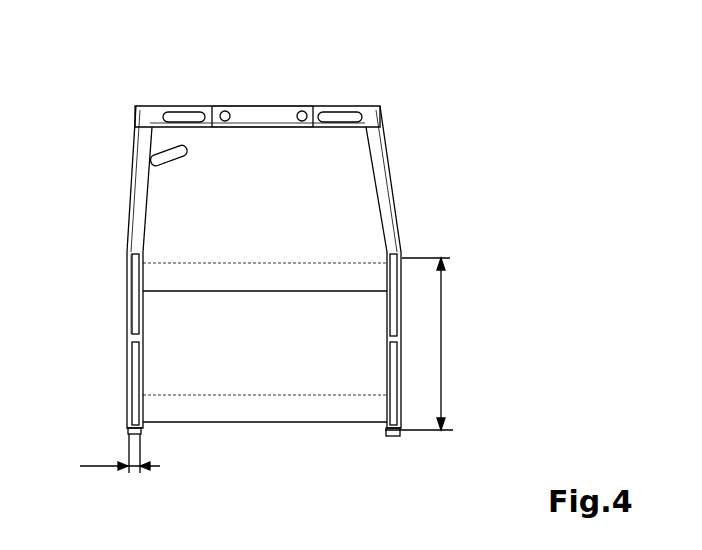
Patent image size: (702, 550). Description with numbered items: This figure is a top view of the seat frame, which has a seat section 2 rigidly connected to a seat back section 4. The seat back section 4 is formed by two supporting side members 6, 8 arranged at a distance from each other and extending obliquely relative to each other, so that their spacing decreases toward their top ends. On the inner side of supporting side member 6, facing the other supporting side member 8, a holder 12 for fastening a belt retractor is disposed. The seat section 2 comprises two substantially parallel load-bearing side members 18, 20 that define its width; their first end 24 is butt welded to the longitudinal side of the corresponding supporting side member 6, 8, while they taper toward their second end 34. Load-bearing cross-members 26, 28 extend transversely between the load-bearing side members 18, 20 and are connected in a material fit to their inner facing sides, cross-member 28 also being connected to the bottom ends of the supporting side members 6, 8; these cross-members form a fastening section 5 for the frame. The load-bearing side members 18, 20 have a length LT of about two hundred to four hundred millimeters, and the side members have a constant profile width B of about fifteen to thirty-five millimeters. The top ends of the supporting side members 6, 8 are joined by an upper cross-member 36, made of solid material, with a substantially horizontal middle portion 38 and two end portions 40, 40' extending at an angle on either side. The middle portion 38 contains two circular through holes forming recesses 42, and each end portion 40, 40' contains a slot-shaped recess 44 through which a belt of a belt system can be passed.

The seat section 2 is at (245, 443).
The seat back section 4 is at (412, 133).
The fastening section 5 is at (245, 360).
The supporting side member 6 is at (131, 180).
The supporting side member 8 is at (392, 180).
The holder 12 is at (168, 165).
The load-bearing side member 18 is at (128, 340).
The load-bearing side member 20 is at (403, 311).
The first end 24 is at (120, 277).
The load-bearing cross-member 26 is at (292, 407).
The load-bearing cross-member 28 is at (200, 278).
The second end 34 is at (386, 429).
The upper cross-member 36 is at (260, 128).
The middle portion 38 is at (245, 115).
The end portion 40 is at (221, 91).
The end portion 40' is at (390, 98).
The recess 42 is at (223, 112).
The slot-shaped recess 44 is at (181, 114).
The profile width B is at (94, 465).
The length LT is at (443, 385).